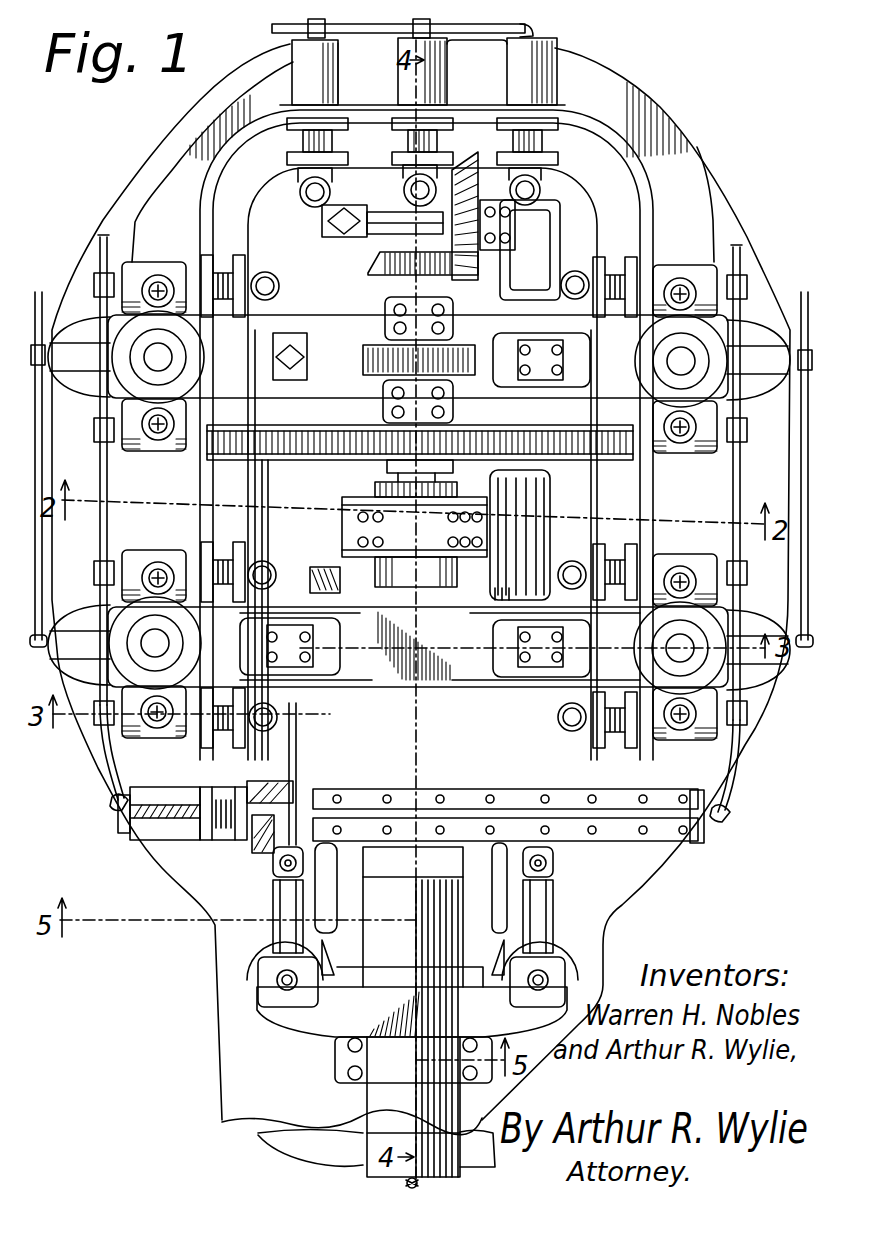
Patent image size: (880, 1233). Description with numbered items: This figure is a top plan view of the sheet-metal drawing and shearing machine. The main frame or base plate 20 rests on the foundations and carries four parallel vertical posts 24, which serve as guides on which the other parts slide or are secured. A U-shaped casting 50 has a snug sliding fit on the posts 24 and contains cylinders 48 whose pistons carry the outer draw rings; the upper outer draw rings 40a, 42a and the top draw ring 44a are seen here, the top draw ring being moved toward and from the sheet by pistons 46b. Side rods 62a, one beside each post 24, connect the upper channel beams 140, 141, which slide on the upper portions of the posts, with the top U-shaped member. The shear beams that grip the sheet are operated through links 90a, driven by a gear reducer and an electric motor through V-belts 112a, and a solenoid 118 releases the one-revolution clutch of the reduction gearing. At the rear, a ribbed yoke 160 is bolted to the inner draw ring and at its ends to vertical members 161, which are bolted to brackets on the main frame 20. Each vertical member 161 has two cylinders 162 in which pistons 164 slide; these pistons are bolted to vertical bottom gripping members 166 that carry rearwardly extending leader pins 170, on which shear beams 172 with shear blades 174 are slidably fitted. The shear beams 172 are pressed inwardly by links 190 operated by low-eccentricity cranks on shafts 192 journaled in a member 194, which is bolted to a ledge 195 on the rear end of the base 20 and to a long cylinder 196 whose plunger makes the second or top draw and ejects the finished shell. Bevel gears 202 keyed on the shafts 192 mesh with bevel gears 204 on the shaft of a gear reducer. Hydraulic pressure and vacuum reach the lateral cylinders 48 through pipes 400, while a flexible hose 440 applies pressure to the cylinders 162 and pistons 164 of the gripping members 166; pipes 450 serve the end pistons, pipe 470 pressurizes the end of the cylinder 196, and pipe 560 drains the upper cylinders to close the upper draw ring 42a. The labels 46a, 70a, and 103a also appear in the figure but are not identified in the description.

The main frame or base plate 20 is at (108, 203).
The vertical posts 24 is at (174, 366).
The upper outer draw ring 40a is at (263, 490).
The upper outer draw ring 42a is at (573, 497).
The top draw ring 44a is at (373, 170).
The bearing block 46a is at (222, 272).
The pistons 46b is at (494, 138).
The cylinders 48 is at (171, 266).
The U-shaped casting 50 is at (153, 178).
The side rods 62a is at (156, 276).
The roller 70a is at (308, 190).
The links 90a is at (345, 237).
The gear box 103a is at (430, 540).
The V-belts 112a is at (512, 600).
The solenoid 118 is at (333, 596).
The upper channel beam 140 is at (455, 668).
The upper channel beam 141 is at (352, 322).
The ribbed yoke 160 is at (462, 790).
The vertical members 161 is at (136, 820).
The cylinders 162 is at (156, 828).
The piston 164 is at (224, 835).
The vertical bottom gripping members 166 is at (258, 781).
The leader pins 170 is at (268, 864).
The shear beams 172 is at (290, 852).
The shear blades 174 is at (292, 800).
The links 190 is at (286, 907).
The shafts 192 is at (285, 990).
The member 194 is at (320, 1020).
The ledge 195 is at (478, 883).
The long cylinder 196 is at (370, 1103).
The bevel gears 202 is at (252, 968).
The bevel gears 204 is at (326, 958).
The pipes 400 is at (100, 453).
The flexible hose 440 is at (110, 770).
The pipes 450 is at (467, 30).
The pipe 470 is at (405, 1184).
The pipe 560 is at (38, 540).